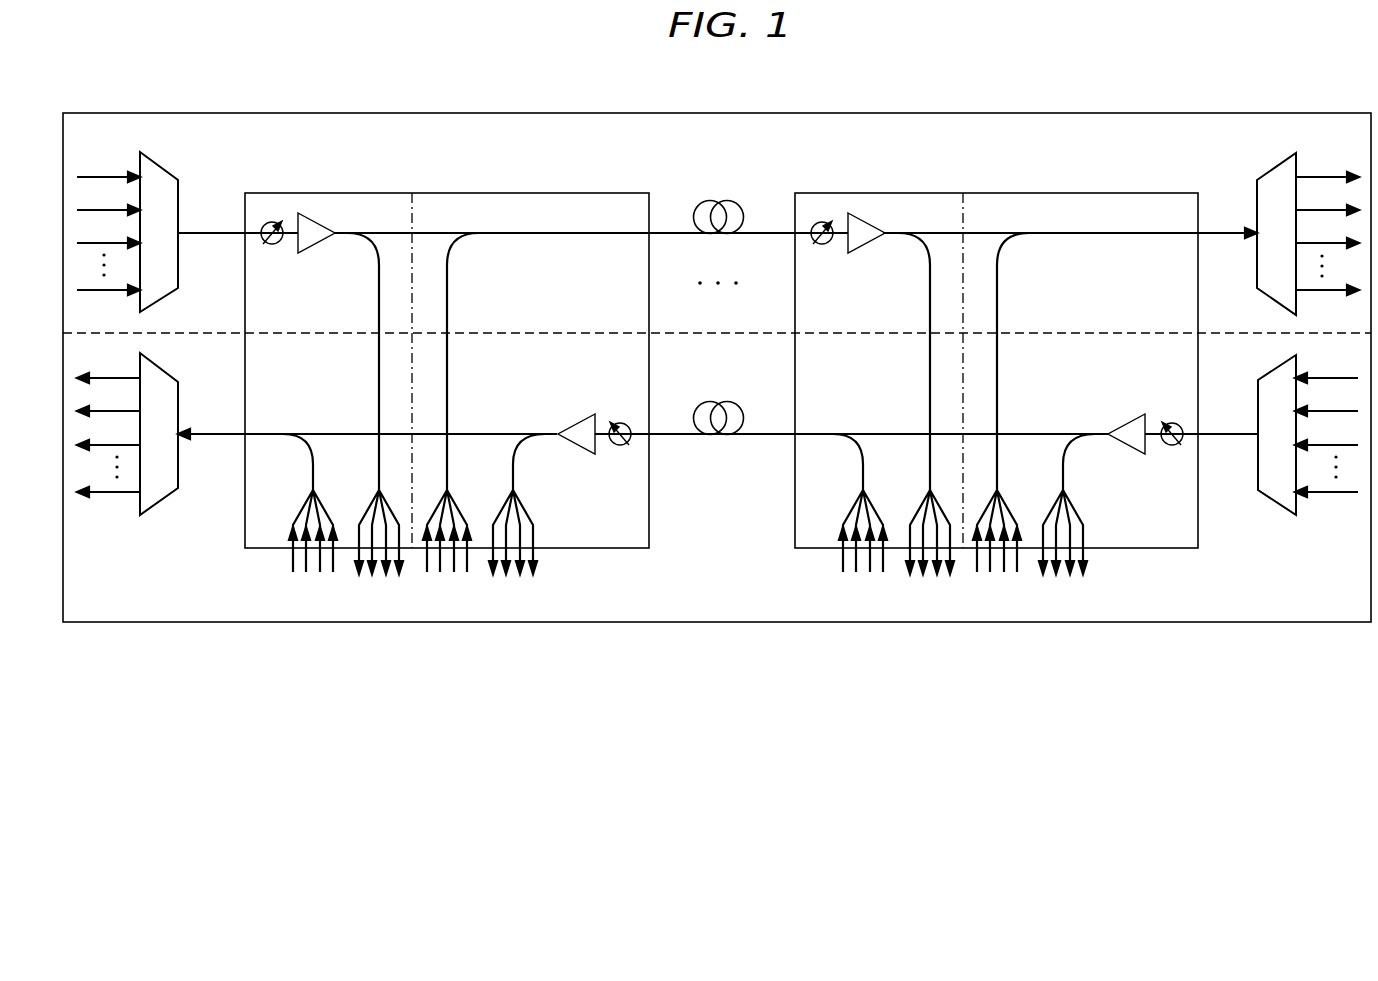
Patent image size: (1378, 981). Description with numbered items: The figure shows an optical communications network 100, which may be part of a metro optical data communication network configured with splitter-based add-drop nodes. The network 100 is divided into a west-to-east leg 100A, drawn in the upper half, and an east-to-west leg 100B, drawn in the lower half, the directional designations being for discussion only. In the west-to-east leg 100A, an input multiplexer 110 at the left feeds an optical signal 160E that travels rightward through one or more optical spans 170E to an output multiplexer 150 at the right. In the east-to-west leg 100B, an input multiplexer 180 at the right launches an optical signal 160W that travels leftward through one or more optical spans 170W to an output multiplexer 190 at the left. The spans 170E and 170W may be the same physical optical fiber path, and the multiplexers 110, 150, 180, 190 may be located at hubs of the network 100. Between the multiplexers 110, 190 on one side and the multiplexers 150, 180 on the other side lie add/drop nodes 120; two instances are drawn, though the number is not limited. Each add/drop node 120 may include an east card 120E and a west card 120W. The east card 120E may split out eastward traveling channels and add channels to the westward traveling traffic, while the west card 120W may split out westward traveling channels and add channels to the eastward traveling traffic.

The optical communications network 100 is at (1036, 82).
The west-to-east leg 100A is at (348, 151).
The east-to-west leg 100B is at (1187, 600).
The input multiplexer 110 is at (160, 168).
The add/drop node 120 is at (718, 364).
The east card 120E is at (332, 308).
The west card 120W is at (572, 308).
The output multiplexer 150 is at (1280, 165).
The optical signal 160E is at (1230, 228).
The optical signal 160W is at (207, 440).
The optical spans 170E is at (713, 199).
The optical spans 170W is at (713, 400).
The input multiplexer 180 is at (1262, 500).
The output multiplexer 190 is at (161, 505).